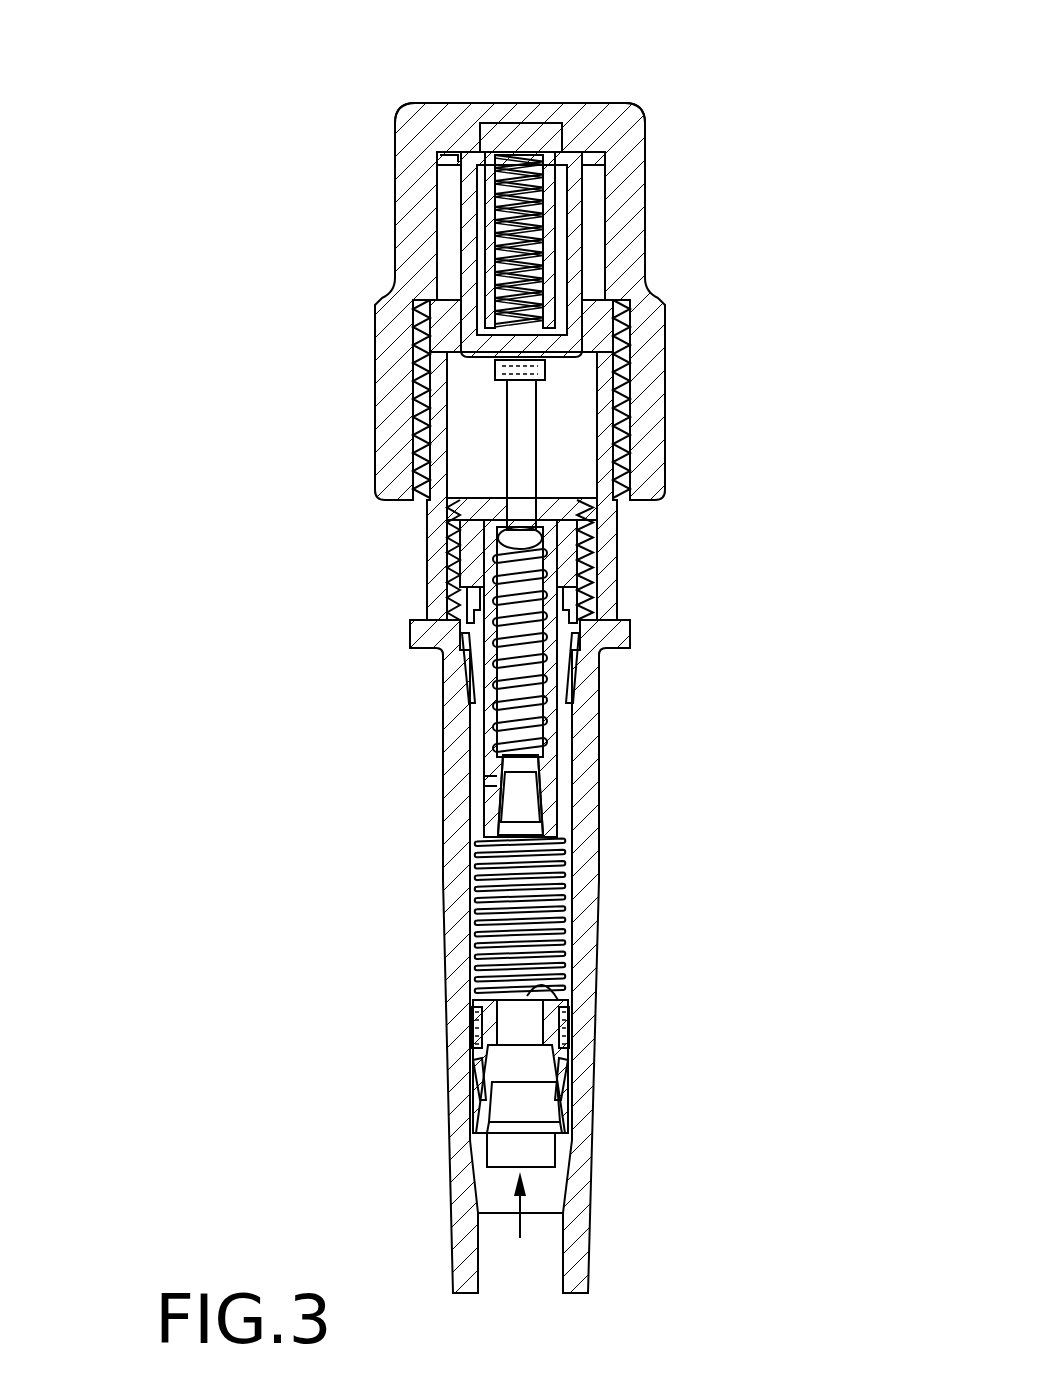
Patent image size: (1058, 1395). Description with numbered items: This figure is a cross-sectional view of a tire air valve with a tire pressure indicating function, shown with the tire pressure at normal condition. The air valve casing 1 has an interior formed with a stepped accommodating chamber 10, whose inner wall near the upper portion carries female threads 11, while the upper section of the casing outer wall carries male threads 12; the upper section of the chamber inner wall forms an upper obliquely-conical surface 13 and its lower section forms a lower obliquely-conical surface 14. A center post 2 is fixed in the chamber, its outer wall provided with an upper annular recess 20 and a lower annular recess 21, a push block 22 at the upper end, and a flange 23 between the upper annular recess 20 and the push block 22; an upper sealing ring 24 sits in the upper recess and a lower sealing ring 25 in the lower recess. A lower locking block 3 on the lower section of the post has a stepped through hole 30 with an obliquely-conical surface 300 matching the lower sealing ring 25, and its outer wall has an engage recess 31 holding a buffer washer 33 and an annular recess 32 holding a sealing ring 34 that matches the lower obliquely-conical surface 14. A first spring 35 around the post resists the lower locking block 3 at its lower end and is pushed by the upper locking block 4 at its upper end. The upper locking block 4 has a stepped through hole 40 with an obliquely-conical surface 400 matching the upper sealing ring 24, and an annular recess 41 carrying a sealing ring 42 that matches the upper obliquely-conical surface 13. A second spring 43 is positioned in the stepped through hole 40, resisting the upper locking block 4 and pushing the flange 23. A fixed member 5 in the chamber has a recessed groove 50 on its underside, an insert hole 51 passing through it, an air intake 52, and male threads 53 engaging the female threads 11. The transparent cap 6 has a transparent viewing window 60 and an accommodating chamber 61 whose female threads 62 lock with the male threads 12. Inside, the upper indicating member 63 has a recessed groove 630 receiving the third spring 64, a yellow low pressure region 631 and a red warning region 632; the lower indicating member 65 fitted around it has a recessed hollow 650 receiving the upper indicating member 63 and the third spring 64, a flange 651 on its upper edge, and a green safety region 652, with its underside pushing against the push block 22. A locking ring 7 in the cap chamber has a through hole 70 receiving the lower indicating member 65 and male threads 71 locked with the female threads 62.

The air valve casing 1 is at (433, 892).
The stepped accommodating chamber 10 is at (473, 948).
The female threads 11 is at (595, 583).
The male threads 12 is at (412, 447).
The upper obliquely-conical surface 13 is at (466, 672).
The lower obliquely-conical surface 14 is at (570, 1172).
The center post 2 is at (551, 445).
The upper annular recess 20 is at (522, 787).
The lower annular recess 21 is at (518, 1125).
The push block 22 is at (547, 372).
The flange 23 is at (562, 490).
The upper sealing ring 24 is at (535, 800).
The lower sealing ring 25 is at (495, 1118).
The lower locking block 3 is at (460, 1079).
The stepped through hole 30 is at (490, 1028).
The obliquely-conical surface 300 is at (490, 1078).
The engage recess 31 is at (530, 993).
The annular recess 32 is at (560, 1123).
The buffer washer 33 is at (566, 1028).
The sealing ring 34 is at (572, 1080).
The first spring 35 is at (560, 917).
The upper locking block 4 is at (462, 785).
The stepped through hole 40 is at (493, 740).
The obliquely-conical surface 400 is at (503, 780).
The annular recess 41 is at (553, 707).
The sealing ring 42 is at (578, 690).
The second spring 43 is at (497, 685).
The fixed member 5 is at (572, 527).
The recessed groove 50 is at (490, 570).
The insert hole 51 is at (455, 490).
The air intake 52 is at (505, 540).
The male threads 53 is at (628, 623).
The cap 6 is at (366, 348).
The transparent viewing window 60 is at (393, 170).
The accommodating chamber 61 is at (595, 210).
The female threads 62 is at (413, 397).
The upper indicating member 63 is at (521, 112).
The recessed groove 630 is at (483, 198).
The low pressure region 631 is at (555, 175).
The warning region 632 is at (558, 257).
The third spring 64 is at (532, 180).
The lower indicating member 65 is at (448, 214).
The recessed hollow 650 is at (478, 203).
The flange 651 is at (448, 157).
The safety region 652 is at (457, 255).
The locking ring 7 is at (622, 304).
The through hole 70 is at (440, 317).
The male threads 71 is at (590, 352).